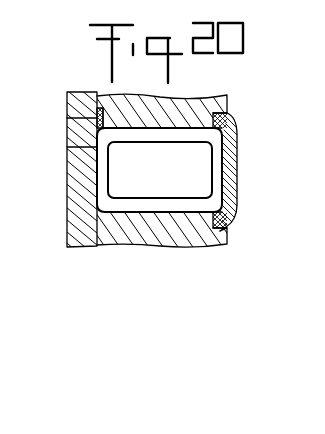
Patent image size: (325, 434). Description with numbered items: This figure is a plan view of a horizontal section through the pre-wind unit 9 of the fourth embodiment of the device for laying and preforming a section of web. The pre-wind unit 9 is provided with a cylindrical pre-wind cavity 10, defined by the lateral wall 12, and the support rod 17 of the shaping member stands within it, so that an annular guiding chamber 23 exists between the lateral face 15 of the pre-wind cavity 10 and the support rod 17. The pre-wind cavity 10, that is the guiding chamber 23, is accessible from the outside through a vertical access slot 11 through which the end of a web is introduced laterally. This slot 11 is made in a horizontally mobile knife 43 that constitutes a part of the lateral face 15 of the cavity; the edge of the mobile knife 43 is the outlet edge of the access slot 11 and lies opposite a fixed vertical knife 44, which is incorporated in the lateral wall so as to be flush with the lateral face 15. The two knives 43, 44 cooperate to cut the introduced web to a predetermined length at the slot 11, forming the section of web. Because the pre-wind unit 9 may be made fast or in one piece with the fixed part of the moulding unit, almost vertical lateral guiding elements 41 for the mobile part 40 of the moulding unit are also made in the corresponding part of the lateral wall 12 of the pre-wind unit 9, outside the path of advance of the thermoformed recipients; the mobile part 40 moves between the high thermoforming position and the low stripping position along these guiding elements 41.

The pre-wind unit 9 is at (90, 82).
The pre-wind cavity 10 is at (128, 203).
The vertical slot 11 is at (70, 137).
The wall 12 is at (200, 105).
The lateral face 15 is at (148, 130).
The support rod 17 is at (190, 188).
The annular guiding chamber 23 is at (213, 180).
The mobile part 40 is at (237, 156).
The lateral guiding elements 41 is at (227, 116).
The horizontally mobile knife 43 is at (72, 218).
The fixed vertical knife 44 is at (97, 118).